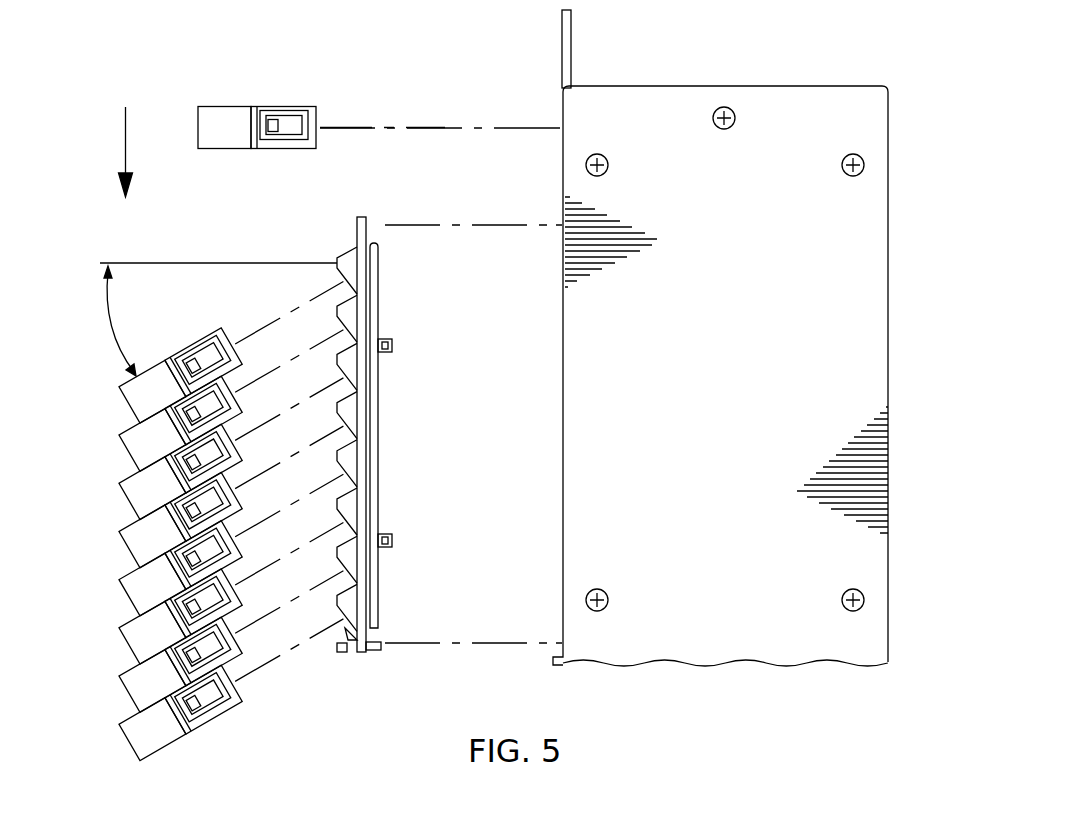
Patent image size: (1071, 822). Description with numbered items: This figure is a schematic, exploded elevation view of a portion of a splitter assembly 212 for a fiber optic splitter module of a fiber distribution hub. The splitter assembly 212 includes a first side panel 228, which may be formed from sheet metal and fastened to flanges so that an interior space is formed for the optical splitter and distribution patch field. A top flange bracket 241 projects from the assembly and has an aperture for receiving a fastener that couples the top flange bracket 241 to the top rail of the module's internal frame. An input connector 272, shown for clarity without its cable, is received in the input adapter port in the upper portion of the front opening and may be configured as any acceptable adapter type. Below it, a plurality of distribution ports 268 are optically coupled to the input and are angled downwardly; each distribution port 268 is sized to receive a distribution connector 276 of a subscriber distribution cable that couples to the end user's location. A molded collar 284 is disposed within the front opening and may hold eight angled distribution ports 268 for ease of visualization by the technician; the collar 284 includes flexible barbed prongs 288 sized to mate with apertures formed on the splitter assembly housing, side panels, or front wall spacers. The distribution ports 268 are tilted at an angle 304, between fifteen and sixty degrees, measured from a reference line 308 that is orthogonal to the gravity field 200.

The gravity field 200 is at (121, 138).
The splitter assembly 212 is at (872, 555).
The first side panel 228 is at (751, 399).
The top flange bracket 241 is at (574, 34).
The distribution ports 268 is at (352, 655).
The input connector 272 is at (229, 107).
The distribution connector 276 is at (160, 748).
The collar 284 is at (341, 652).
The flexible barbed prongs 288 is at (373, 222).
The angle 304 is at (104, 322).
The reference line 308 is at (216, 262).